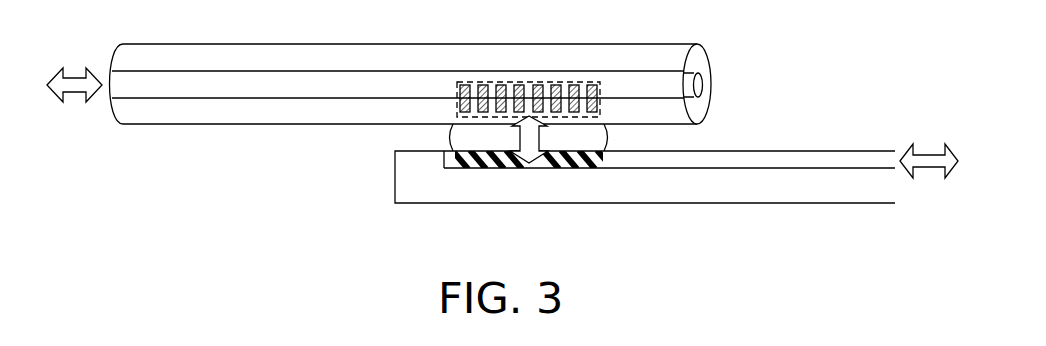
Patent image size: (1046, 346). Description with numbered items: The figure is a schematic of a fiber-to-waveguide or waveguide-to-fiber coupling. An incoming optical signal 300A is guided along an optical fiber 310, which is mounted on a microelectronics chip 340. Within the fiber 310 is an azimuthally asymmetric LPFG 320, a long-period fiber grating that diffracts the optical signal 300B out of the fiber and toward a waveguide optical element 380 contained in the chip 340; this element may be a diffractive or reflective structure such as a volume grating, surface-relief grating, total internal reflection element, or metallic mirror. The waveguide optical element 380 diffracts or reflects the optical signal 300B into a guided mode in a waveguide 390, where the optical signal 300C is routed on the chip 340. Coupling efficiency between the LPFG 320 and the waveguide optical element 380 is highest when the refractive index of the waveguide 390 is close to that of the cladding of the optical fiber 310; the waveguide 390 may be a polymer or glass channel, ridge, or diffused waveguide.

The incoming optical signal 300A is at (75, 85).
The optical fiber 310 is at (323, 57).
The azimuthally asymmetric LPFG 320 is at (530, 80).
The diffracted optical signal 300B is at (530, 140).
The waveguide optical element 380 is at (570, 167).
The microelectronics chip 340 is at (645, 177).
The waveguide 390 is at (805, 160).
The routed optical signal 300C is at (930, 162).